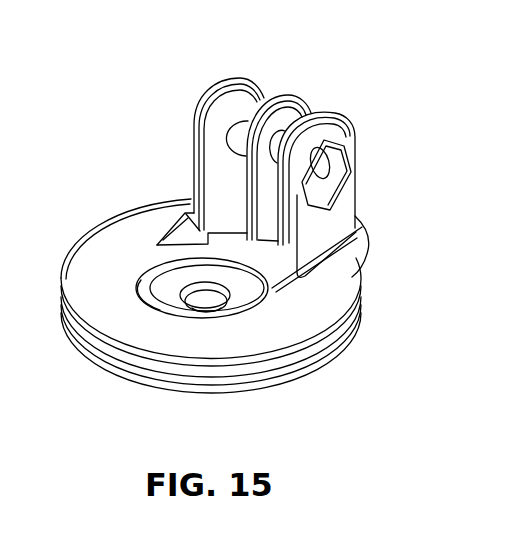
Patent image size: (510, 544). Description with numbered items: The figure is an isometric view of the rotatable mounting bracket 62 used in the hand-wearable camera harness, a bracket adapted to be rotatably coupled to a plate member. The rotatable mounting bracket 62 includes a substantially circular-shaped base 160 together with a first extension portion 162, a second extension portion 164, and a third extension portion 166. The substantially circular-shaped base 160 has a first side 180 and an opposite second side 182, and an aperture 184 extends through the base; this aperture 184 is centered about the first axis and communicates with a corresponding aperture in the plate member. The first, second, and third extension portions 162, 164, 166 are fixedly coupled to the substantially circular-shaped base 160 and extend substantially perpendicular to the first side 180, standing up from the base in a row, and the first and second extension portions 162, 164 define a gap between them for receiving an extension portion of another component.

The rotatable mounting bracket 62 is at (258, 217).
The substantially circular-shaped base 160 is at (232, 294).
The first extension portion 162 is at (243, 67).
The second extension portion 164 is at (288, 82).
The third extension portion 166 is at (337, 100).
The first side 180 is at (107, 250).
The second side 182 is at (147, 388).
The aperture 184 is at (238, 303).